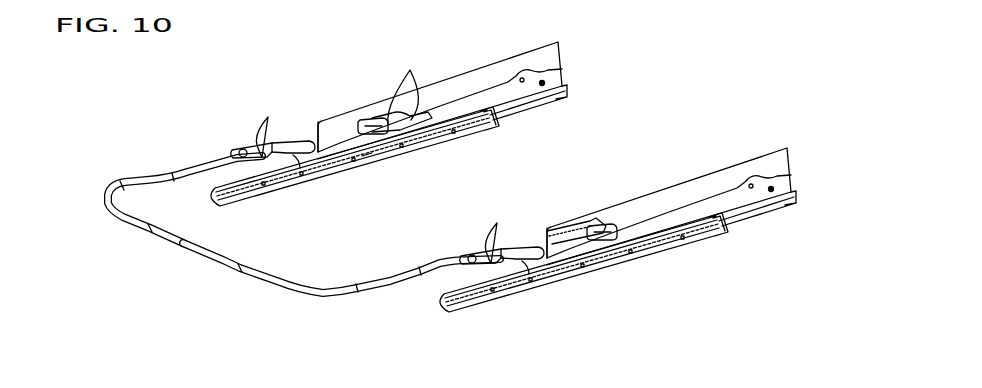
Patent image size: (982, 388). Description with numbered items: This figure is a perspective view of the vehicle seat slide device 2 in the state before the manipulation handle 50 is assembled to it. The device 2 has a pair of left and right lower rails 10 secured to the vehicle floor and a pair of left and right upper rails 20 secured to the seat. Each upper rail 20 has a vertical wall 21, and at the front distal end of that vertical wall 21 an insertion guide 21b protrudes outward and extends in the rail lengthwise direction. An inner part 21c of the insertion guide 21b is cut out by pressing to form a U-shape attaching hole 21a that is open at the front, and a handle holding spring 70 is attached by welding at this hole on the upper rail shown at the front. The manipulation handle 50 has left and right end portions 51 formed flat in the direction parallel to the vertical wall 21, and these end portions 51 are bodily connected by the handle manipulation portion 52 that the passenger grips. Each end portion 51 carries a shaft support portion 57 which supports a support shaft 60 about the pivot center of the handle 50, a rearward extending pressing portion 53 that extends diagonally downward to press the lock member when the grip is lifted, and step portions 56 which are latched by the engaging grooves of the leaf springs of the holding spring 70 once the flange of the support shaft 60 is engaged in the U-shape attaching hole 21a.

The vehicle seat slide device 2 is at (349, 74).
The lower rail 10 is at (470, 125).
The upper rail 20 is at (552, 98).
The vertical wall 21 is at (566, 52).
The U-shape attaching hole 21a is at (367, 158).
The insertion guide 21b is at (327, 133).
The inner part of the insertion guide 21c is at (366, 121).
The manipulation handle 50 is at (256, 267).
The end portion of the manipulation handle 51 is at (296, 141).
The handle manipulation portion 52 is at (185, 243).
The pressing portion 53 is at (300, 168).
The step portion 56 is at (268, 117).
The shaft support portion 57 is at (233, 146).
The support shaft 60 is at (243, 148).
The handle holding spring 70 is at (408, 72).